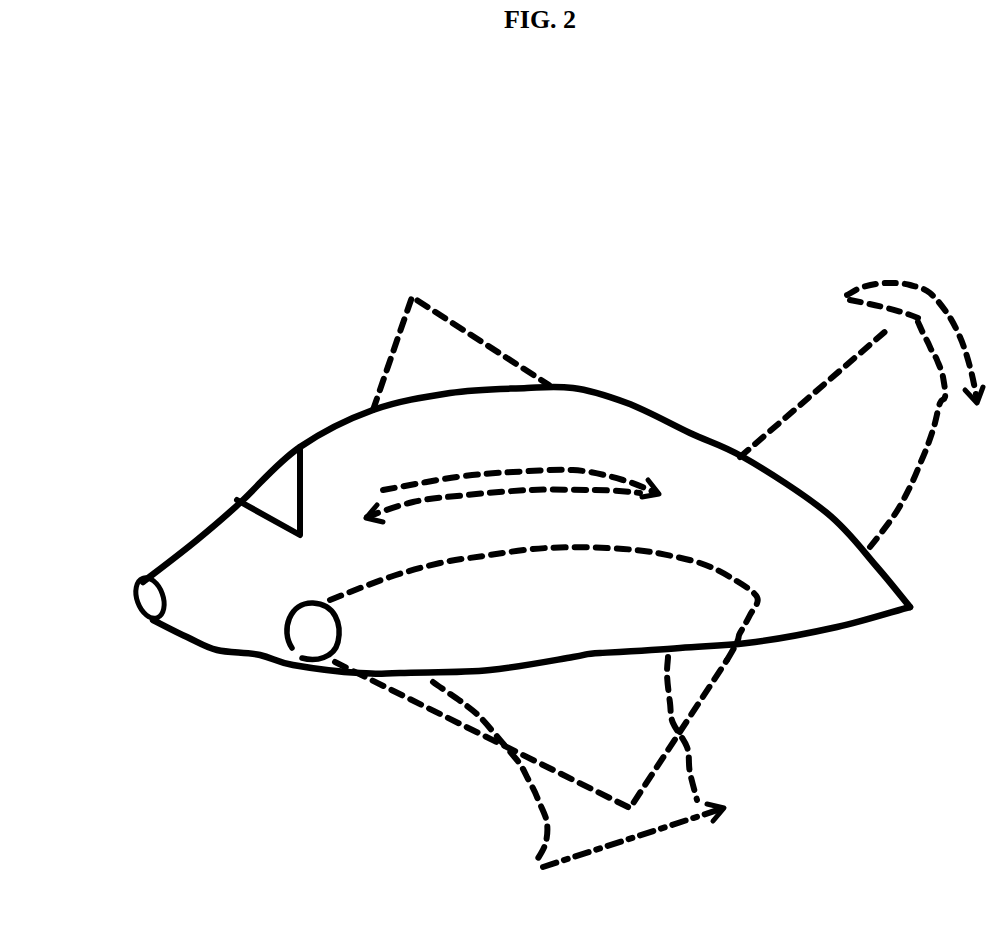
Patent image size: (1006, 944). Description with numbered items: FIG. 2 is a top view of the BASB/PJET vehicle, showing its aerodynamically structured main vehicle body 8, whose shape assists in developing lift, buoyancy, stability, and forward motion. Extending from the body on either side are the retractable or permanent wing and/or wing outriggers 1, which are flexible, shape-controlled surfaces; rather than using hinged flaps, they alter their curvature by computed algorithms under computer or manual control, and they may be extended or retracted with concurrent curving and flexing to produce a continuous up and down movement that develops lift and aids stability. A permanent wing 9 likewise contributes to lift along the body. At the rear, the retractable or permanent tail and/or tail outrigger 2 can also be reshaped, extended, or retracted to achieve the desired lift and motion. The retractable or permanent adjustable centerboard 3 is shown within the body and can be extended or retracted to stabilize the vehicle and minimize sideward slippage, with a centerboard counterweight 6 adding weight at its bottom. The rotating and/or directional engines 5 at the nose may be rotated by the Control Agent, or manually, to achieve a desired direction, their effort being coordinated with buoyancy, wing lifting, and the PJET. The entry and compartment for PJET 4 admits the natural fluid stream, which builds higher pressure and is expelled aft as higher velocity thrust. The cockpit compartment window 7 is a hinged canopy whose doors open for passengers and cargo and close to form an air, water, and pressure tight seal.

The retractable or permanent wing and/or wing outrigger 1 is at (443, 348).
The retractable or permanent tail and/or tail outrigger 2 is at (925, 312).
The retractable or permanent adjustable centerboard 3 is at (525, 478).
The entry and compartment for PJET 4 is at (318, 626).
The rotating and/or directional engines 5 is at (150, 598).
The centerboard counterweight 6 is at (677, 793).
The cockpit compartment window 7 is at (536, 861).
The main vehicle body 8 is at (267, 500).
The permanent wing 9 is at (797, 585).